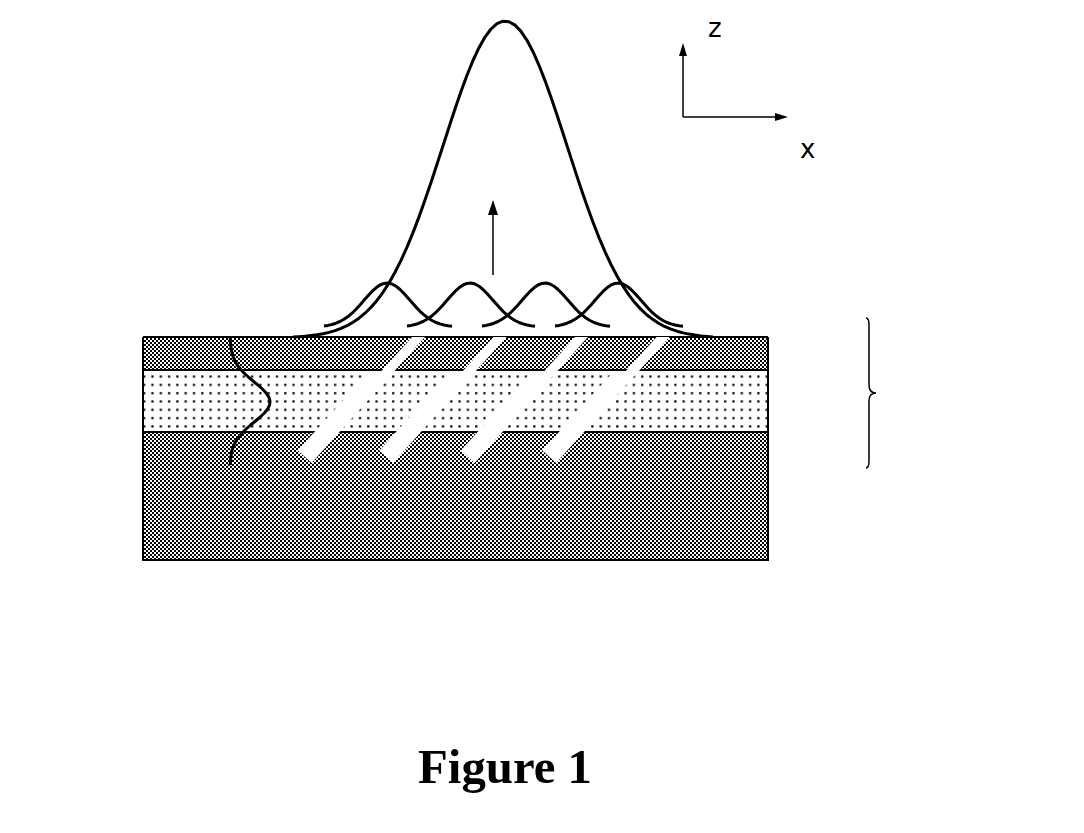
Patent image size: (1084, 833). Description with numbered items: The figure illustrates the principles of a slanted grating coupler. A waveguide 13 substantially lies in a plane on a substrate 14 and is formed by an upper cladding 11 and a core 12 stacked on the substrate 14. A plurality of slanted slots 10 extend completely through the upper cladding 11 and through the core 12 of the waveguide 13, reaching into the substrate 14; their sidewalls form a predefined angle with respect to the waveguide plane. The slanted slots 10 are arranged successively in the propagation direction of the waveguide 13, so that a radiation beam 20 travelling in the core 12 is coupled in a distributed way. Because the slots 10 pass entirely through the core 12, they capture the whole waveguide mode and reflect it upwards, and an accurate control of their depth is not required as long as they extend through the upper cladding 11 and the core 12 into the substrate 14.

The slanted slots 10 is at (543, 457).
The upper cladding 11 is at (752, 358).
The core 12 is at (748, 402).
The waveguide 13 is at (899, 393).
The substrate 14 is at (750, 497).
The radiation beam 20 is at (238, 411).